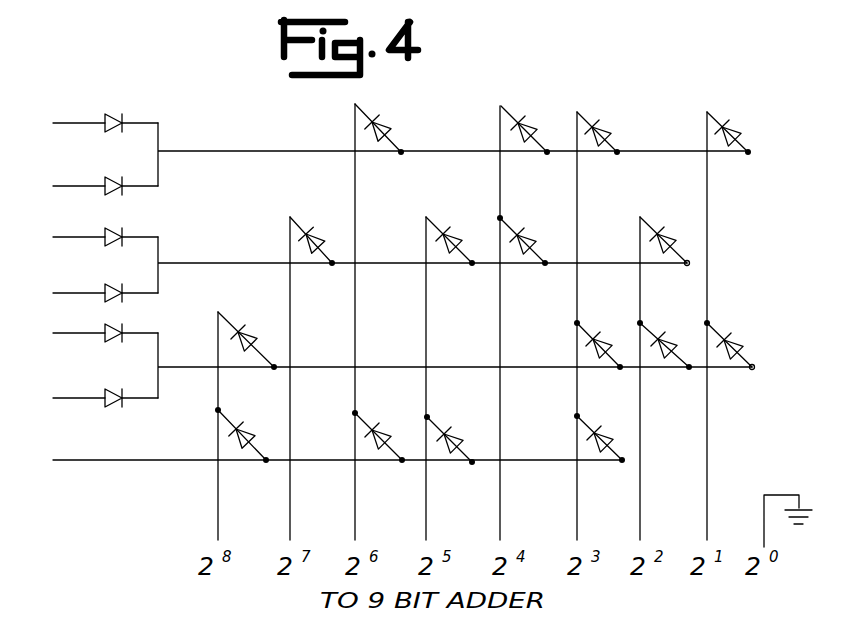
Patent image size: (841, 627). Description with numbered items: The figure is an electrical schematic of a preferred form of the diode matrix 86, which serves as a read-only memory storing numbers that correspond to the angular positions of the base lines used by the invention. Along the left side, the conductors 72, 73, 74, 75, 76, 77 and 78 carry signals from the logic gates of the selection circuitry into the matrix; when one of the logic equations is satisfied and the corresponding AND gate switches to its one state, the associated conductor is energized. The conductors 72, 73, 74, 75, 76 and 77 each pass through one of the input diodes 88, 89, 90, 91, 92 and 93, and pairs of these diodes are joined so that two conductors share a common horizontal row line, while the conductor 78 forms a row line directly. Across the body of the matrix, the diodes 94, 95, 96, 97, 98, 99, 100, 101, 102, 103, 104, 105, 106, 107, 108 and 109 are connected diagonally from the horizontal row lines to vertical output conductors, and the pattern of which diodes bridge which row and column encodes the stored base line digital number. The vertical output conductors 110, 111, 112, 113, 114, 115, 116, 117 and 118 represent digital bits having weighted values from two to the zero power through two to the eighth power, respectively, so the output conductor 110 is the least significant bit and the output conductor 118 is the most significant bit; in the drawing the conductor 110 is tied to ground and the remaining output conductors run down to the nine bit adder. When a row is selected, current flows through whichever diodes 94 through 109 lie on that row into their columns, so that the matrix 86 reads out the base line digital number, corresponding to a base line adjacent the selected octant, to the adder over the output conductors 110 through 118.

The diode matrix 86 is at (606, 41).
The conductor 72 is at (77, 123).
The conductor 73 is at (78, 186).
The conductor 74 is at (78, 237).
The conductor 75 is at (78, 293).
The conductor 76 is at (78, 333).
The conductor 77 is at (78, 398).
The conductor 78 is at (78, 460).
The diode 88 is at (118, 113).
The diode 89 is at (118, 178).
The diode 90 is at (118, 228).
The diode 91 is at (118, 293).
The diode 92 is at (118, 325).
The diode 93 is at (118, 390).
The diode 94 is at (385, 120).
The diode 95 is at (337, 210).
The diode 96 is at (278, 322).
The diode 97 is at (273, 417).
The diode 98 is at (527, 125).
The diode 99 is at (480, 215).
The diode 100 is at (402, 408).
The diode 101 is at (552, 217).
The diode 102 is at (478, 415).
The diode 103 is at (597, 120).
The diode 104 is at (728, 123).
The diode 105 is at (687, 215).
The diode 106 is at (617, 312).
The diode 107 is at (620, 412).
The diode 108 is at (685, 312).
The diode 109 is at (730, 332).
The output conductor 110 is at (764, 528).
The output conductor 111 is at (707, 530).
The output conductor 112 is at (640, 530).
The output conductor 113 is at (577, 530).
The output conductor 114 is at (500, 530).
The output conductor 115 is at (426, 530).
The output conductor 116 is at (355, 530).
The output conductor 117 is at (290, 530).
The output conductor 118 is at (218, 530).